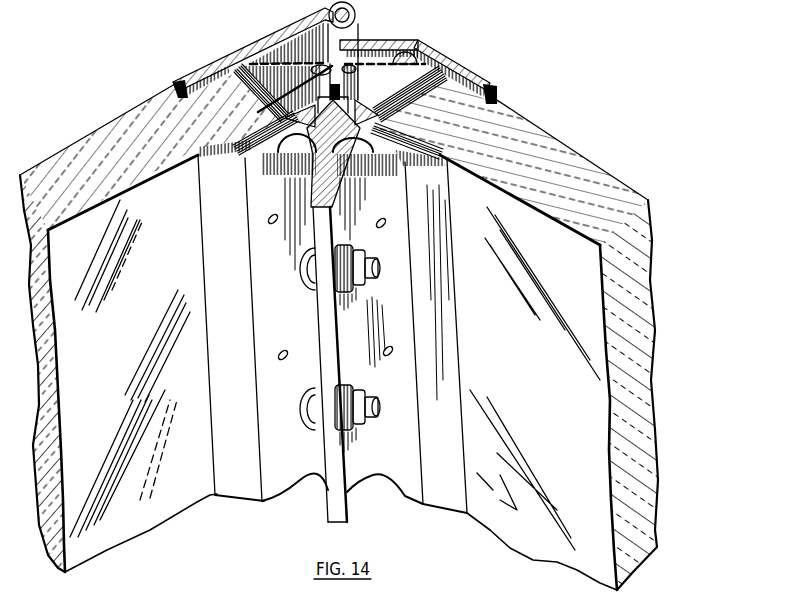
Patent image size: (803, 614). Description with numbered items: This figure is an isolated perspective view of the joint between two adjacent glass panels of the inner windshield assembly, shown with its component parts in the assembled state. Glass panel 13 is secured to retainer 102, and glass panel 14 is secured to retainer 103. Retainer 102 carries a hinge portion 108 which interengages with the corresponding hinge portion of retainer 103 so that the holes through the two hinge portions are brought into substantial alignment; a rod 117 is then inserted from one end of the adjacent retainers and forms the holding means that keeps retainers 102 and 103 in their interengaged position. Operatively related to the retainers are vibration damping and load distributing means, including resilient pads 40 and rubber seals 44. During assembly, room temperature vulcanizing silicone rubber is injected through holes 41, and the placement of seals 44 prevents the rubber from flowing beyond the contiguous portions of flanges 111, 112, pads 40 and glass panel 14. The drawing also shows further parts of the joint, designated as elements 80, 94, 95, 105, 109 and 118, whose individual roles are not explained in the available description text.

The glass panel 13 is at (68, 165).
The glass panel 14 is at (591, 182).
The seal 44 is at (173, 97).
The sealing strip 80 is at (249, 91).
The left glazing bead 94 is at (312, 80).
The right glazing bead 95 is at (355, 70).
The retainer 102 is at (262, 43).
The retainer 103 is at (428, 43).
The hinge portion 108 is at (360, 34).
The rod 117 is at (355, 13).
The resilient pads 40 is at (474, 74).
The flange 111 is at (492, 86).
The flange 112 is at (432, 198).
The nut assembly 118 is at (377, 271).
The holes 41 is at (273, 228).
The cover strip 109 is at (325, 496).
The spline 105 is at (353, 486).